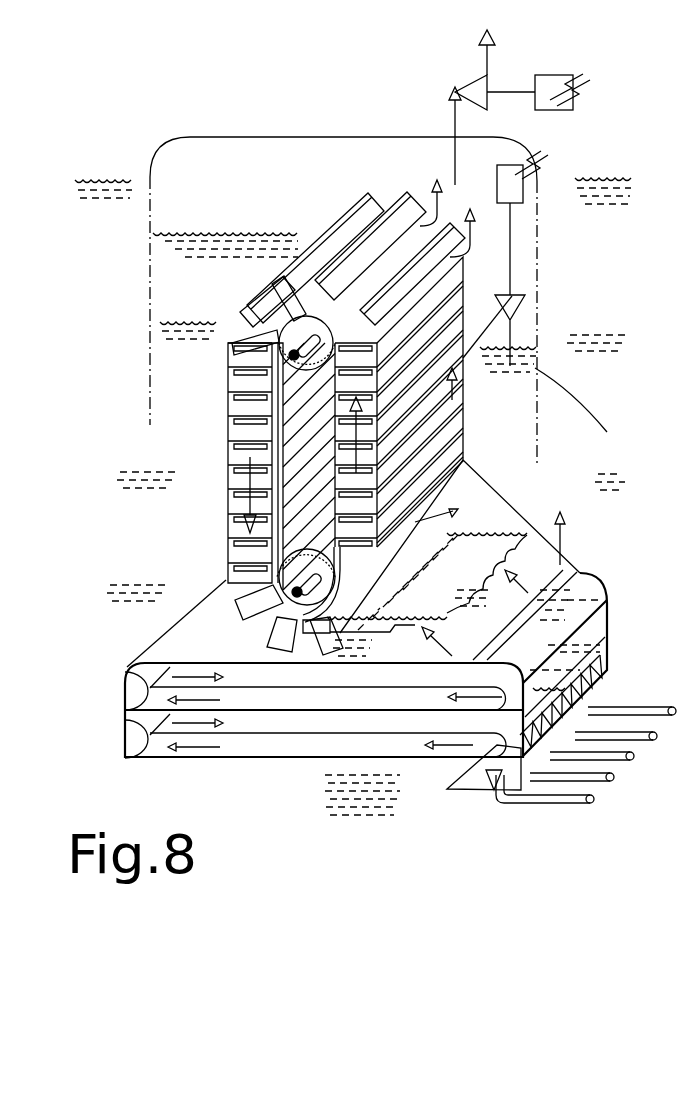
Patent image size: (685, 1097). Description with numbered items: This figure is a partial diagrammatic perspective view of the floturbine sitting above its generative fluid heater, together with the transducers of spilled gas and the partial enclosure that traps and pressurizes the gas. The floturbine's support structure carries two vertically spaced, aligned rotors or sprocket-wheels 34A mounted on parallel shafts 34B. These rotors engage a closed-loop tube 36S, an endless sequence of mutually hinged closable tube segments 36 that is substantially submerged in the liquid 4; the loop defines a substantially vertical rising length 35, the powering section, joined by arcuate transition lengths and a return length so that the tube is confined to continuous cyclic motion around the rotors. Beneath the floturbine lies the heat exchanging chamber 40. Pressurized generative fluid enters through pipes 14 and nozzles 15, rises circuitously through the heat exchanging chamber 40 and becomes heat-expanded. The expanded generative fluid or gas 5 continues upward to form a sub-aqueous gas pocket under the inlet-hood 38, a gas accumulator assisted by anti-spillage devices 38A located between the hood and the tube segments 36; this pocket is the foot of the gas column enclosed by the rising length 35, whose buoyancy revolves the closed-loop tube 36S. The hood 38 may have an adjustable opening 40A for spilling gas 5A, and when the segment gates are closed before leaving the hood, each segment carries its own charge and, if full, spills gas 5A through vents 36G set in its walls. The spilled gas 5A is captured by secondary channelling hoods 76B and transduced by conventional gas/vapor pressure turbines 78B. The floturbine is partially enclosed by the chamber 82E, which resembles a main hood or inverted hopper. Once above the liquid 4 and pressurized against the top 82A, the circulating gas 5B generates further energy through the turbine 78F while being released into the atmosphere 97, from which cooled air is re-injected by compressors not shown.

The liquid 4 is at (110, 240).
The generative fluid or gas 5 is at (493, 522).
The spilled gas 5A is at (452, 400).
The circulating gas 5B is at (279, 197).
The pipes 14 is at (628, 757).
The nozzles 15 is at (490, 787).
The rotors or sprocket-wheels 34A is at (290, 341).
The shafts 34B is at (284, 358).
The rising length 35 is at (463, 445).
The closable tube segments 36 is at (277, 282).
The vents 36G is at (453, 415).
The closed-loop tube 36S is at (214, 488).
The inlet-hood 38 is at (504, 494).
The anti-spillage devices 38A is at (313, 633).
The heat exchanging chamber 40 is at (148, 646).
The adjustable opening 40A is at (595, 578).
The hoods 76B is at (475, 332).
The turbines 78B is at (520, 294).
The turbine 78F is at (473, 85).
The top or roof 82A is at (270, 137).
The chamber 82E is at (150, 388).
The atmosphere 97 is at (331, 97).